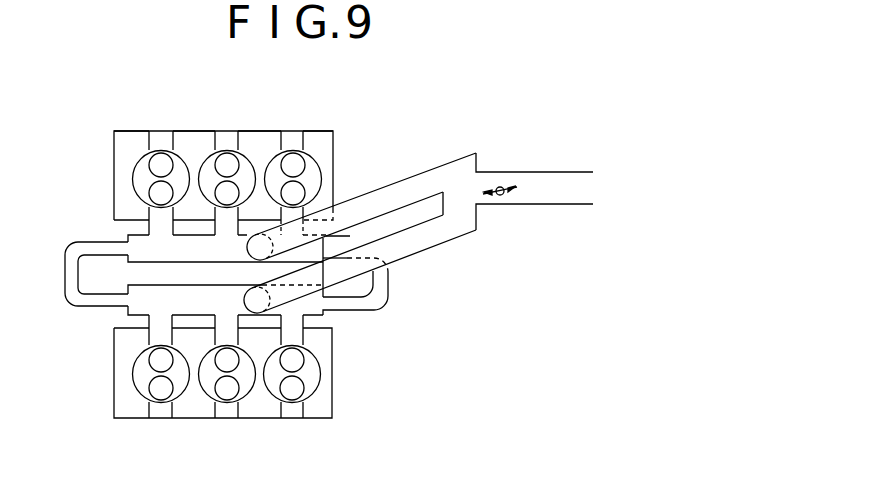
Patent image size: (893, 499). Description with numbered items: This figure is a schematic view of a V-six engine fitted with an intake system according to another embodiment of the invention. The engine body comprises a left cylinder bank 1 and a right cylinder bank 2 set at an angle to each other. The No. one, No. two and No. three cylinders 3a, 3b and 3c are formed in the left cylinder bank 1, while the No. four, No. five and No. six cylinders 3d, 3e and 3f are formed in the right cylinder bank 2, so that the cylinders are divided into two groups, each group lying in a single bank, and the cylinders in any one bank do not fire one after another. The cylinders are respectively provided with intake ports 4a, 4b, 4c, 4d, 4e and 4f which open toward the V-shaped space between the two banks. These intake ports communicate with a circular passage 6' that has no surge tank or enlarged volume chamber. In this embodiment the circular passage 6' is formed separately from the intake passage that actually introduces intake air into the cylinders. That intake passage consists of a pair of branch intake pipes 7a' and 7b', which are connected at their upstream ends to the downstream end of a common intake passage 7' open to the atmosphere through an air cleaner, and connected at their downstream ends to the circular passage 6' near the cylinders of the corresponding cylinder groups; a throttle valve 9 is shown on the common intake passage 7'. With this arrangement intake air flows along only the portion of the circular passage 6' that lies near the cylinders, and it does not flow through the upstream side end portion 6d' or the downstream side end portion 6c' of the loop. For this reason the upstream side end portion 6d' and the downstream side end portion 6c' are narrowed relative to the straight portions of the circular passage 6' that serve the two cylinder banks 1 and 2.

The left cylinder bank 1 is at (108, 128).
The right cylinder bank 2 is at (109, 406).
The No. 1 cylinder 3a is at (314, 160).
The No. 2 cylinder 3b is at (247, 158).
The No. 3 cylinder 3c is at (137, 153).
The No. 4 cylinder 3d is at (320, 388).
The No. 5 cylinder 3e is at (133, 376).
The No. 6 cylinder 3f is at (206, 394).
The intake port 4a is at (300, 158).
The intake port 4b is at (216, 157).
The intake port 4c is at (150, 194).
The intake port 4d is at (305, 362).
The intake port 4e is at (149, 360).
The intake port 4f is at (239, 390).
The circular passage 6' is at (283, 287).
The downstream side end portion 6c' is at (66, 276).
The upstream side end portion 6d' is at (392, 286).
The common intake passage 7' is at (534, 197).
The branch intake pipe 7a' is at (361, 188).
The branch intake pipe 7b' is at (380, 252).
The throttle valve 9 is at (508, 186).